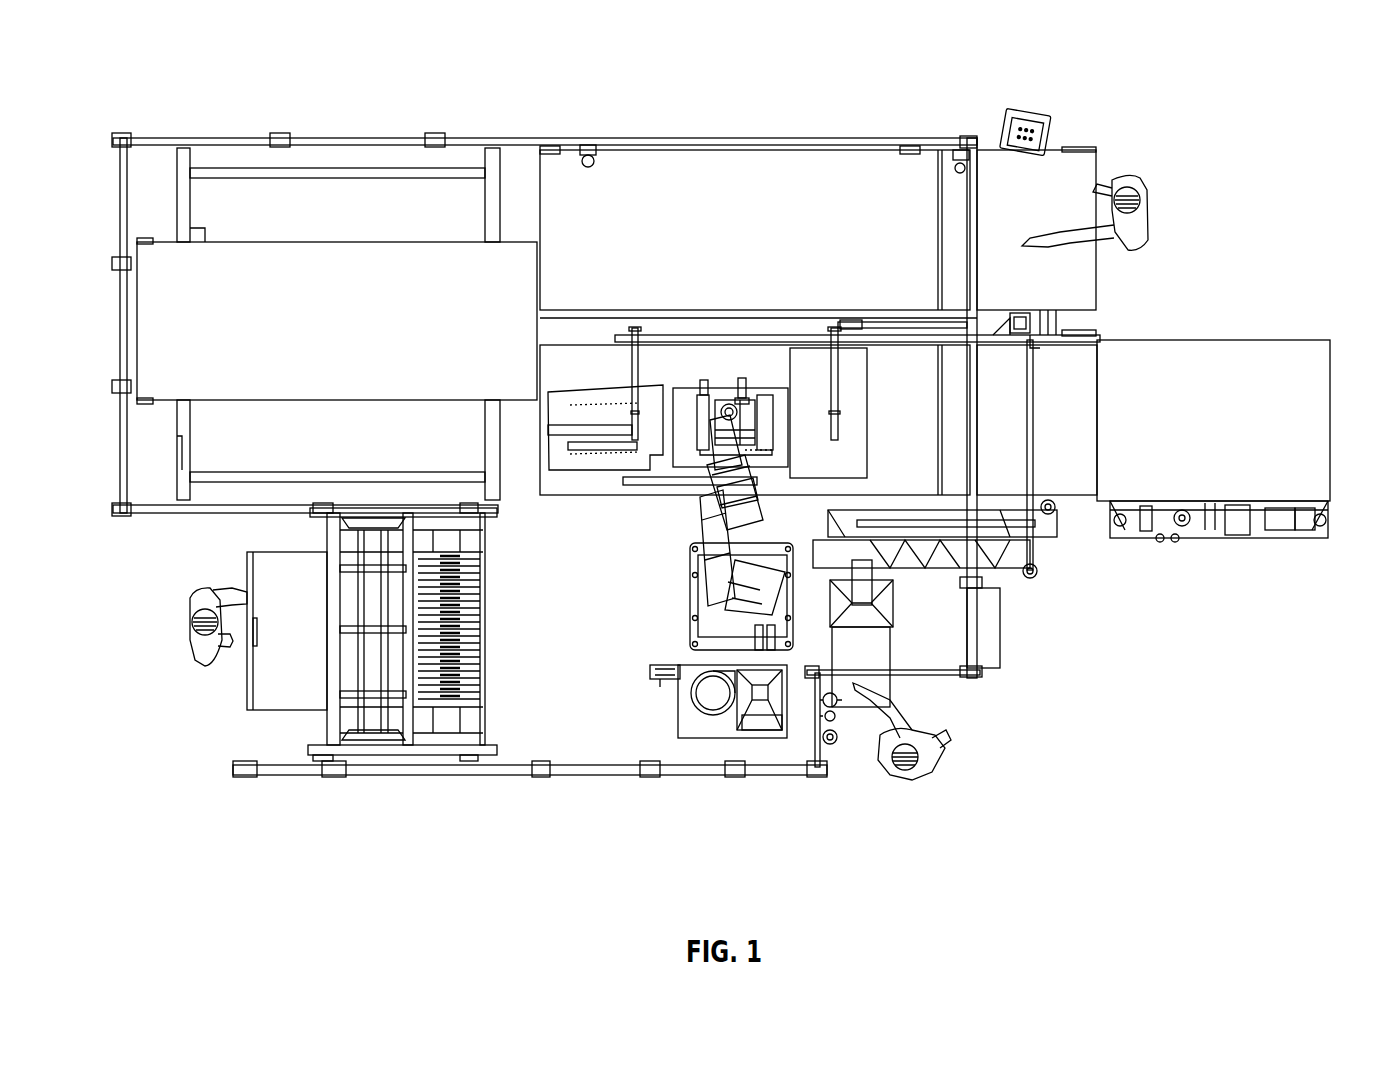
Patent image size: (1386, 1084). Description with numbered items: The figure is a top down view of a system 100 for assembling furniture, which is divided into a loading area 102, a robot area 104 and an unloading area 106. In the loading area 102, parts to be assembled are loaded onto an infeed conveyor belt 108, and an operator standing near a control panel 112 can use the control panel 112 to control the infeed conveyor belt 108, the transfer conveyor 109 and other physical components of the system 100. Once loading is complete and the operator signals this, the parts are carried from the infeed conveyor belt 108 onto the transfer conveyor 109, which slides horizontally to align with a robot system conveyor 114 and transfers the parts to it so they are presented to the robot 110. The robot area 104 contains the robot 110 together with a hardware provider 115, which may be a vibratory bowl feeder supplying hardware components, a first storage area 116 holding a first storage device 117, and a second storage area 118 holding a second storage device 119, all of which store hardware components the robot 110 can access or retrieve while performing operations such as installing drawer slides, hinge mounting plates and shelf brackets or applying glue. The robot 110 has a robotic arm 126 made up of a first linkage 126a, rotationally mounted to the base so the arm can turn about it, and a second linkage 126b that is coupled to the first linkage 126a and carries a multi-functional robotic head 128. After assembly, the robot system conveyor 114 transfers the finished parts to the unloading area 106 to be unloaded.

The system for assembling furniture 100 is at (1243, 120).
The loading area 102 is at (1085, 113).
The robot area 104 is at (617, 585).
The unloading area 106 is at (1247, 585).
The infeed conveyor belt 108 is at (880, 233).
The transfer conveyor 109 is at (291, 277).
The robot 110 is at (728, 627).
The control panel 112 is at (1028, 127).
The robot system conveyor 114 is at (743, 365).
The hardware provider 115 is at (873, 540).
The first storage area 116 is at (328, 777).
The first storage device 117 is at (442, 710).
The second storage area 118 is at (858, 792).
The second storage device 119 is at (760, 690).
The robotic arm 126 is at (837, 583).
The first linkage 126a is at (708, 550).
The second linkage 126b is at (700, 517).
The multi-functional robotic head 128 is at (735, 393).